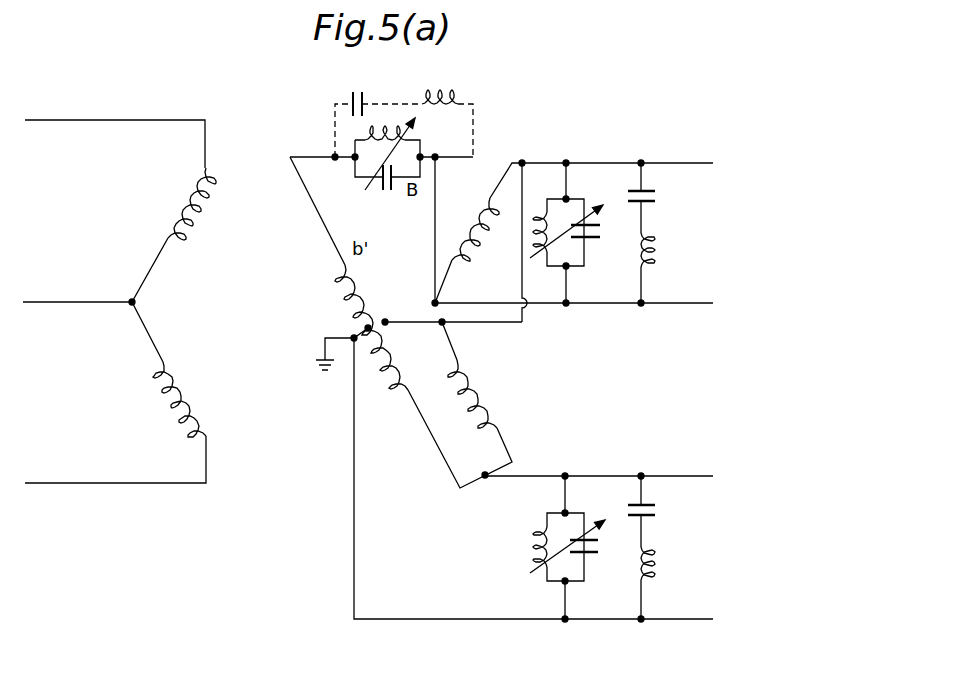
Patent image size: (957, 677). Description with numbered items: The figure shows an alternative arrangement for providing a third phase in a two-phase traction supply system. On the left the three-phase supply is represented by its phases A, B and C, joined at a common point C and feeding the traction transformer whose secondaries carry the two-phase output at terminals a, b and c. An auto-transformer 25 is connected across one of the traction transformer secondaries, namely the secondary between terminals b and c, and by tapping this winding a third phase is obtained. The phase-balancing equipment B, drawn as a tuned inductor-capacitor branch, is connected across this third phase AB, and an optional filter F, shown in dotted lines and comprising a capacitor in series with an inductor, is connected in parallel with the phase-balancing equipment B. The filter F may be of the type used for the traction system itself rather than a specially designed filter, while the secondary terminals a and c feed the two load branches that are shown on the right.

The auto-transformer 25 is at (347, 293).
The phase A is at (192, 192).
The phase-balancing equipment B is at (179, 413).
The phase C is at (95, 300).
The filter F is at (404, 118).
The secondary terminal a is at (475, 220).
The secondary terminal b is at (482, 395).
The secondary terminal c is at (451, 310).